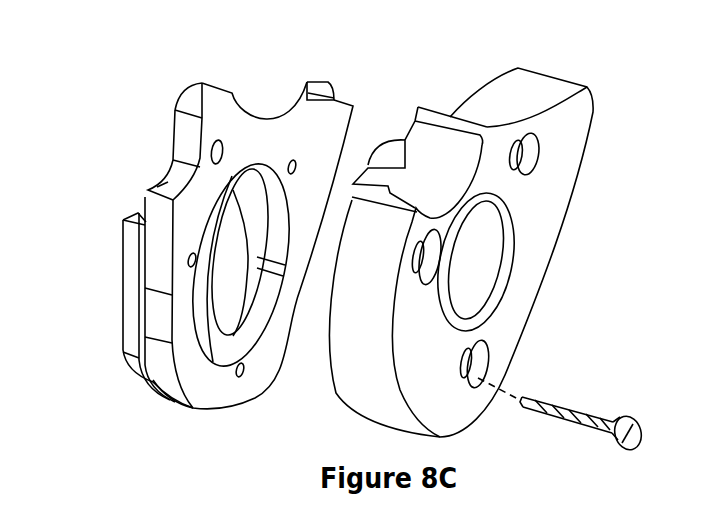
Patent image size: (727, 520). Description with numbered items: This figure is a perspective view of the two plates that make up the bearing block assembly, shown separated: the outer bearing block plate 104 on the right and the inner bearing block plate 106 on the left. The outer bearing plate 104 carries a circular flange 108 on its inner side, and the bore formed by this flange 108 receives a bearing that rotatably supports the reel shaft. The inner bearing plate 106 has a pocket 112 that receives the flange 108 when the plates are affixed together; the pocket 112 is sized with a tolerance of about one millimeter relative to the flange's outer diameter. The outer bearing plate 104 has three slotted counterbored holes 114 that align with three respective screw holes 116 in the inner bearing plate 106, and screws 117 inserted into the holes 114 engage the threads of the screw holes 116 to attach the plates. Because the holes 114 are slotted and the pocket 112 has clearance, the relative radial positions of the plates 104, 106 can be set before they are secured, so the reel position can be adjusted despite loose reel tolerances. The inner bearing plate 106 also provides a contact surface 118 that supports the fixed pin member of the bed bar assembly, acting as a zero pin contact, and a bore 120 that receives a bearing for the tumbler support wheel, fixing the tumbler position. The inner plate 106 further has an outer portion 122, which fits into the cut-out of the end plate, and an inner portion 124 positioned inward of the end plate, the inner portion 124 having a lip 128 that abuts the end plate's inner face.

The outer bearing block plate 104 is at (530, 241).
The inner bearing block plate 106 is at (220, 110).
The circular flange 108 is at (397, 157).
The pocket 112 is at (273, 220).
The slotted counterbored holes 114 is at (522, 160).
The screw holes 116 is at (293, 160).
The screws 117 is at (565, 420).
The contact surface 118 is at (175, 183).
The bore 120 is at (212, 150).
The outer portion 122 is at (170, 378).
The inner portion 124 is at (133, 358).
The lip 128 is at (183, 380).